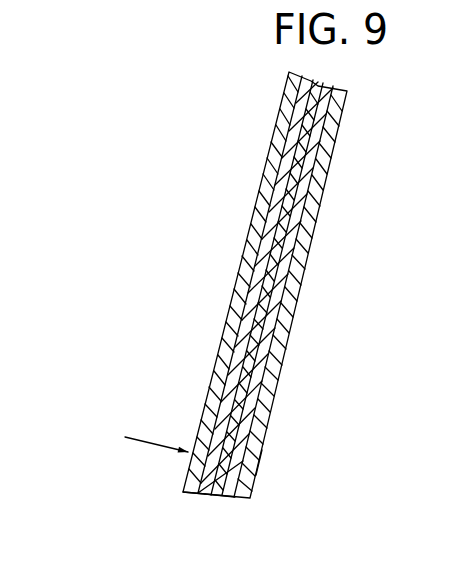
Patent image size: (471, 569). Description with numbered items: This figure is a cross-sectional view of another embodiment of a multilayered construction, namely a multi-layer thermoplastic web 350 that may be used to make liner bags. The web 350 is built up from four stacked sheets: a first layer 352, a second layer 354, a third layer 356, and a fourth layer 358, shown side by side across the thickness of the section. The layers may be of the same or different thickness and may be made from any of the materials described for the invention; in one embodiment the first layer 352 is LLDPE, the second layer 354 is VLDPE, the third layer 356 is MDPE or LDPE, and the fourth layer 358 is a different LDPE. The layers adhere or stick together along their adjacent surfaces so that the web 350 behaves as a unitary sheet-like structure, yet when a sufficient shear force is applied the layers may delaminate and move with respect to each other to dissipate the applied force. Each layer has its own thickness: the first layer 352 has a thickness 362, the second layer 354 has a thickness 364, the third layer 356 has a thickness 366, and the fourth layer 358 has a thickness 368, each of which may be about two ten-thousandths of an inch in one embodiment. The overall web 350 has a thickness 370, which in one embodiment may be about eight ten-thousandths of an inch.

The web 350 is at (197, 138).
The first layer 352 is at (200, 418).
The second layer 354 is at (201, 497).
The third layer 356 is at (220, 500).
The fourth layer 358 is at (288, 340).
The thickness of first layer 362 is at (357, 207).
The thickness of second layer 364 is at (350, 255).
The thickness of third layer 366 is at (178, 250).
The thickness of fourth layer 368 is at (180, 285).
The thickness of web 370 is at (258, 470).